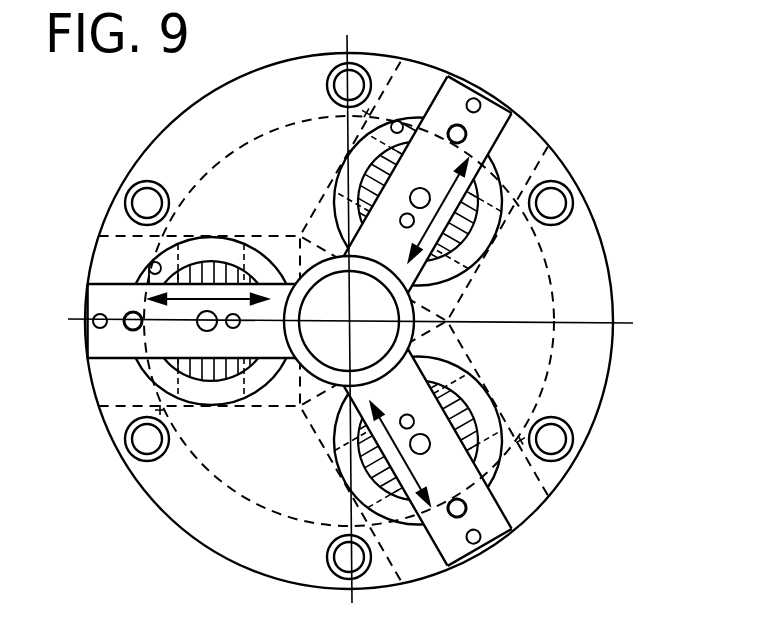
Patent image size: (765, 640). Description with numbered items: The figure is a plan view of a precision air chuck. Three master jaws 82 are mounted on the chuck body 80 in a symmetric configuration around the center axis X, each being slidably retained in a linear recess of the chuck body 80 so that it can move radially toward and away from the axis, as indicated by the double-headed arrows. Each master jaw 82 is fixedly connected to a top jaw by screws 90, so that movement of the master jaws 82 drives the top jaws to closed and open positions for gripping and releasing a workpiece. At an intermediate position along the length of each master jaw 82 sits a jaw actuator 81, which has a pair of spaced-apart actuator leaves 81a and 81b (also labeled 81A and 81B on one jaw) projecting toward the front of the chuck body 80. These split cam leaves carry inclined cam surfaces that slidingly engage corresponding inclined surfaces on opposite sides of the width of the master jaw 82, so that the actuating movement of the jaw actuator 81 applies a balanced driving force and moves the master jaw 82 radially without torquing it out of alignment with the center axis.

The chuck body 80 is at (212, 112).
The jaw actuator 81 is at (122, 372).
The actuator leaf 81a is at (351, 152).
The actuator leaf 81b is at (462, 272).
The actuator leaf 81A is at (215, 372).
The actuator leaf 81B is at (216, 268).
The master jaw 82 is at (97, 299).
The screw 90 is at (421, 189).